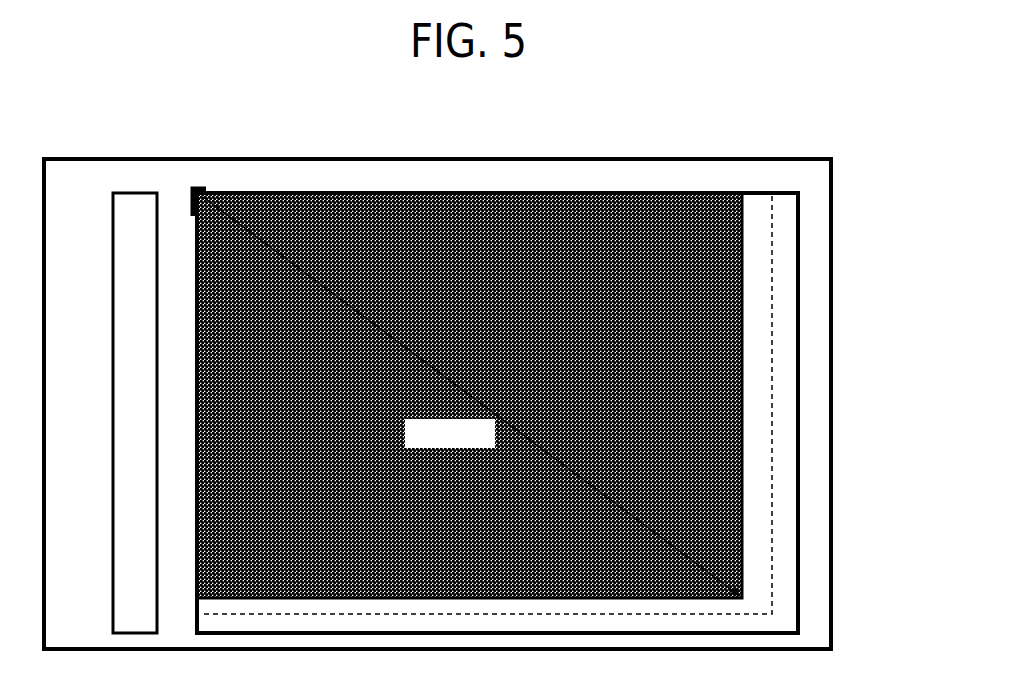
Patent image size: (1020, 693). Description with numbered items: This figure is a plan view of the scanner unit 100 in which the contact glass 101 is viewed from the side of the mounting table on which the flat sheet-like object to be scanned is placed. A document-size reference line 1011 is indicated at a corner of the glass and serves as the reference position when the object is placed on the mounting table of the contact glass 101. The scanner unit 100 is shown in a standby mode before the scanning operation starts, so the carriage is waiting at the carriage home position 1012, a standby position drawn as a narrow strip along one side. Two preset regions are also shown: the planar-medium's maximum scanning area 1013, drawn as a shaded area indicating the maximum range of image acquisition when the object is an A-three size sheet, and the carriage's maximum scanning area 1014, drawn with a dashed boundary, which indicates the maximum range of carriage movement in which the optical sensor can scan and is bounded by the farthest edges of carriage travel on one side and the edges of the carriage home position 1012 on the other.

The scanner unit 100 is at (80, 158).
The contact glass 101 is at (815, 181).
The document-size reference line 1011 is at (195, 181).
The carriage home position 1012 is at (110, 224).
The planar-medium's maximum scanning area 1013 is at (369, 208).
The carriage's maximum scanning area 1014 is at (775, 299).